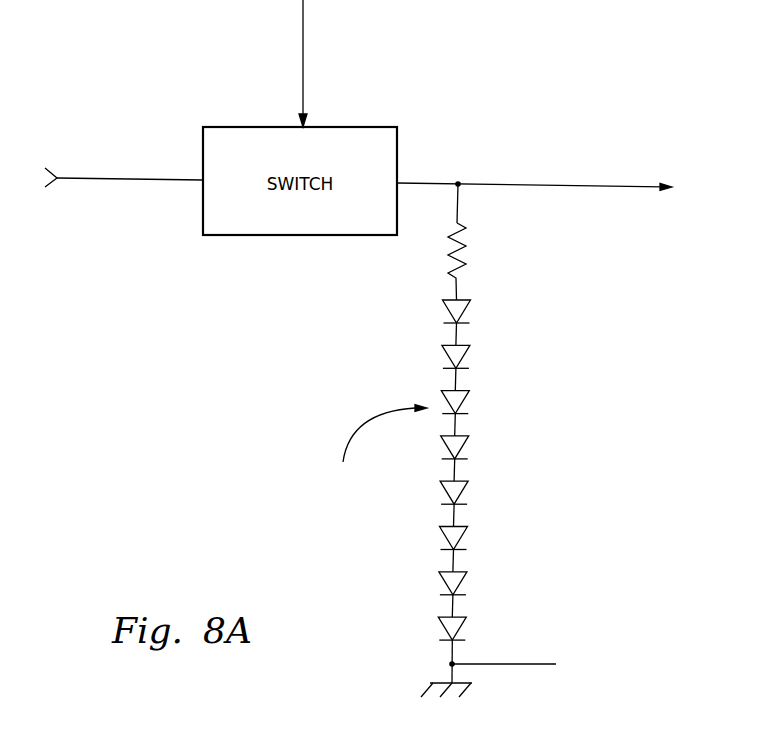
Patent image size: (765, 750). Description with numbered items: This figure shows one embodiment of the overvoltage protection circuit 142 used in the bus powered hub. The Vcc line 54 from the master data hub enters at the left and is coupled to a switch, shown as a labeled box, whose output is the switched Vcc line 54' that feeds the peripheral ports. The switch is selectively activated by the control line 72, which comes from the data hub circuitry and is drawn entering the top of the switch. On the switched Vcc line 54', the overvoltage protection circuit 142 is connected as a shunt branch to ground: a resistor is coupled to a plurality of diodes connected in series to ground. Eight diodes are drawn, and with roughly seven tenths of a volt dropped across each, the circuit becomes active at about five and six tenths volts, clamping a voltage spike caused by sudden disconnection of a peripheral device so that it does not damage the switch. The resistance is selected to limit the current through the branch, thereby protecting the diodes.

The control line 72 is at (303, 12).
The Vcc line 54 is at (124, 211).
The switched Vcc line 54' is at (534, 151).
The overvoltage protection circuit 142 is at (603, 422).